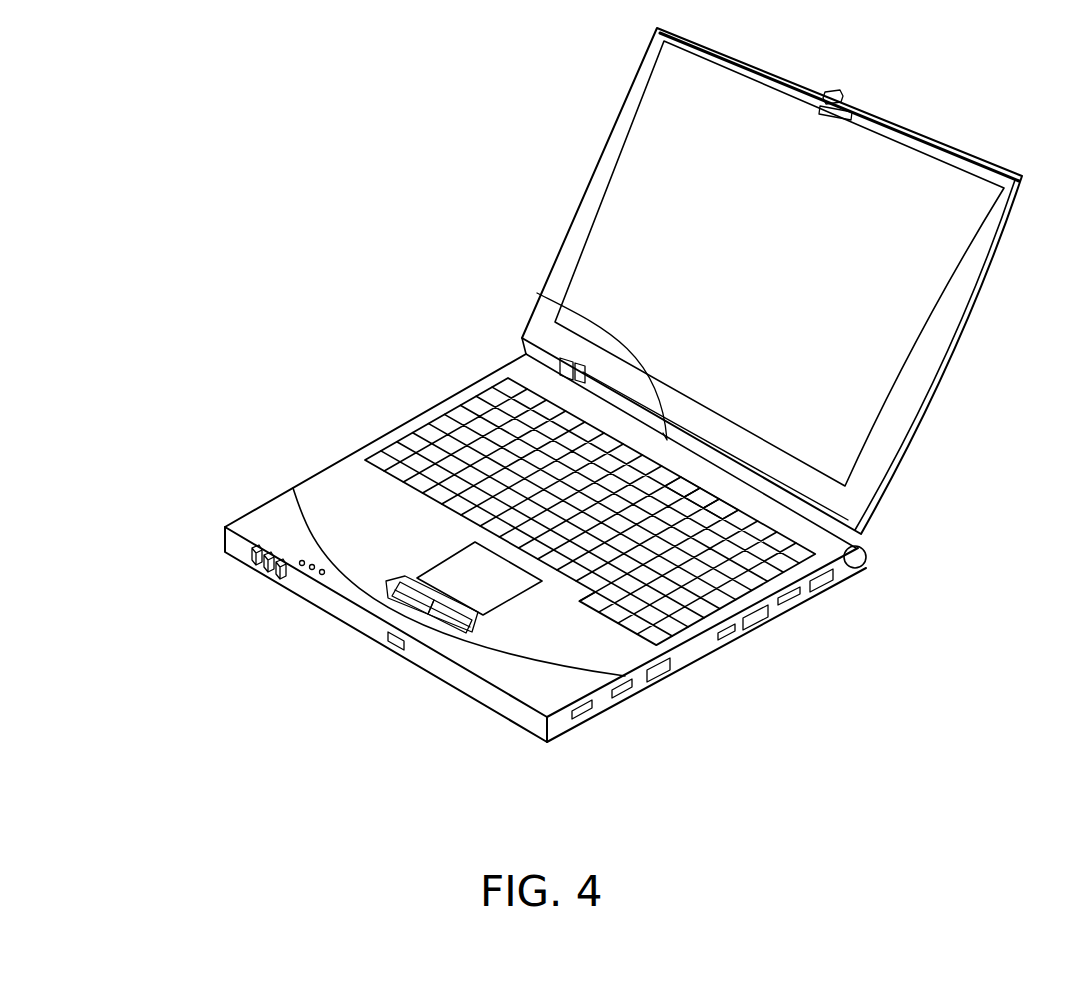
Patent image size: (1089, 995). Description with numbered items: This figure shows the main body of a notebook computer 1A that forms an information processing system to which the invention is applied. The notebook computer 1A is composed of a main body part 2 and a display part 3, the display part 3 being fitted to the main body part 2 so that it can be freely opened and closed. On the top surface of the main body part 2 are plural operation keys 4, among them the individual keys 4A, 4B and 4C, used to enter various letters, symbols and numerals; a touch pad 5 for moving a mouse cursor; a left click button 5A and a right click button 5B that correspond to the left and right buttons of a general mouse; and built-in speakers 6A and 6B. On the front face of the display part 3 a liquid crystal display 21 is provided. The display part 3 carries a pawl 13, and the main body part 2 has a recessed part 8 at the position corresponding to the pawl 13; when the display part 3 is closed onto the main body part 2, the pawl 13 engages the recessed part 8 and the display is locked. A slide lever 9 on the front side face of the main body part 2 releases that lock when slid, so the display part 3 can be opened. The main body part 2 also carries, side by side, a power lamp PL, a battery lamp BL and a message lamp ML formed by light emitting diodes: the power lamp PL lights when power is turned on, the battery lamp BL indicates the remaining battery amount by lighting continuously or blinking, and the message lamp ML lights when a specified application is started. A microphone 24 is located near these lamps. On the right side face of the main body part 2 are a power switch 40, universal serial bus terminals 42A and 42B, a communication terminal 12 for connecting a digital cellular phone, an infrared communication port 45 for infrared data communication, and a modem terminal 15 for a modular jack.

The notebook computer 1A is at (882, 790).
The main body part 2 is at (390, 424).
The display part 3 is at (1014, 236).
The operation keys 4 is at (473, 455).
The operation key 4A is at (673, 490).
The operation key 4B is at (693, 505).
The operation key 4C is at (713, 513).
The touch pad 5 is at (385, 598).
The left click button 5A is at (393, 602).
The right click button 5B is at (455, 632).
The built-in speaker 6A is at (530, 367).
The built-in speaker 6B is at (862, 541).
The recessed part 8 is at (405, 625).
The slide lever 9 is at (396, 652).
The communication terminal 12 is at (760, 628).
The pawl 13 is at (845, 97).
The modem terminal 15 is at (830, 588).
The liquid crystal display 21 is at (928, 296).
The microphone 24 is at (304, 546).
The power switch 40 is at (585, 718).
The universal serial bus terminal 42A is at (664, 681).
The universal serial bus terminal 42B is at (730, 641).
The infrared communication port 45 is at (795, 604).
The message lamp ML is at (254, 566).
The battery lamp BL is at (269, 578).
The power lamp PL is at (286, 582).